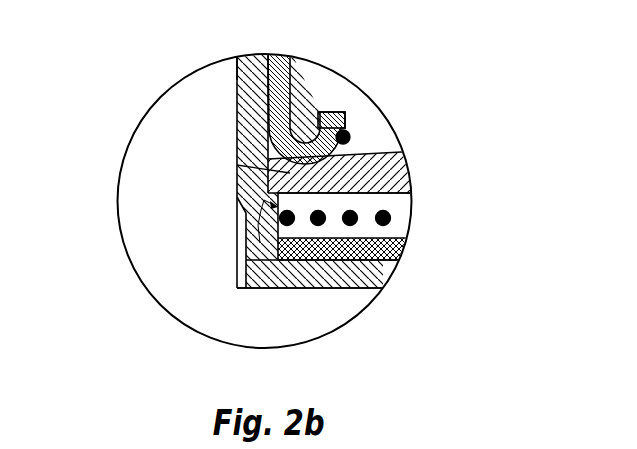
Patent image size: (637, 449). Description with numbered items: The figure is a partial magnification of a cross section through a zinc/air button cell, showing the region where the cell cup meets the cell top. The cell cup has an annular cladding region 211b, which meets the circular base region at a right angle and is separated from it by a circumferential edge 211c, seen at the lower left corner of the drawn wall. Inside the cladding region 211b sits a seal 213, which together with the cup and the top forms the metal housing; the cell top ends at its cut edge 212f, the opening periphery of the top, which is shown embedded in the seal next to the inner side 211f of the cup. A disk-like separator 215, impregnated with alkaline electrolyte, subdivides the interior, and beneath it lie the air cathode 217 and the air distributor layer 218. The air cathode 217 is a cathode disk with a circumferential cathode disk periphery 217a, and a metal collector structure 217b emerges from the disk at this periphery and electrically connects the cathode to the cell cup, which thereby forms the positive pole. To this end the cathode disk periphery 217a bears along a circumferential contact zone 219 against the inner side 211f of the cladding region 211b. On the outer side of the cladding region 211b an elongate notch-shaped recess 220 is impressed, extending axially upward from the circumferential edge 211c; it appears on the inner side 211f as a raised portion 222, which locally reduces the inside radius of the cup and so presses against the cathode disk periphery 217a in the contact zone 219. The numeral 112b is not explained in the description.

The lens barrel inner surface 112b is at (238, 63).
The seal 213 is at (288, 127).
The separator 215 is at (237, 165).
The cladding region 211b is at (237, 188).
The contact zone 219 is at (237, 220).
The recess 220 is at (237, 278).
The circumferential edge 211c is at (237, 288).
The cut edge 212f is at (320, 114).
The inner side 211f is at (346, 125).
The raised portion 222 is at (411, 152).
The air cathode 217 is at (405, 194).
The metal collector structure 217b is at (391, 218).
The air distributor layer 218 is at (405, 250).
The cathode disk periphery 217a is at (385, 280).